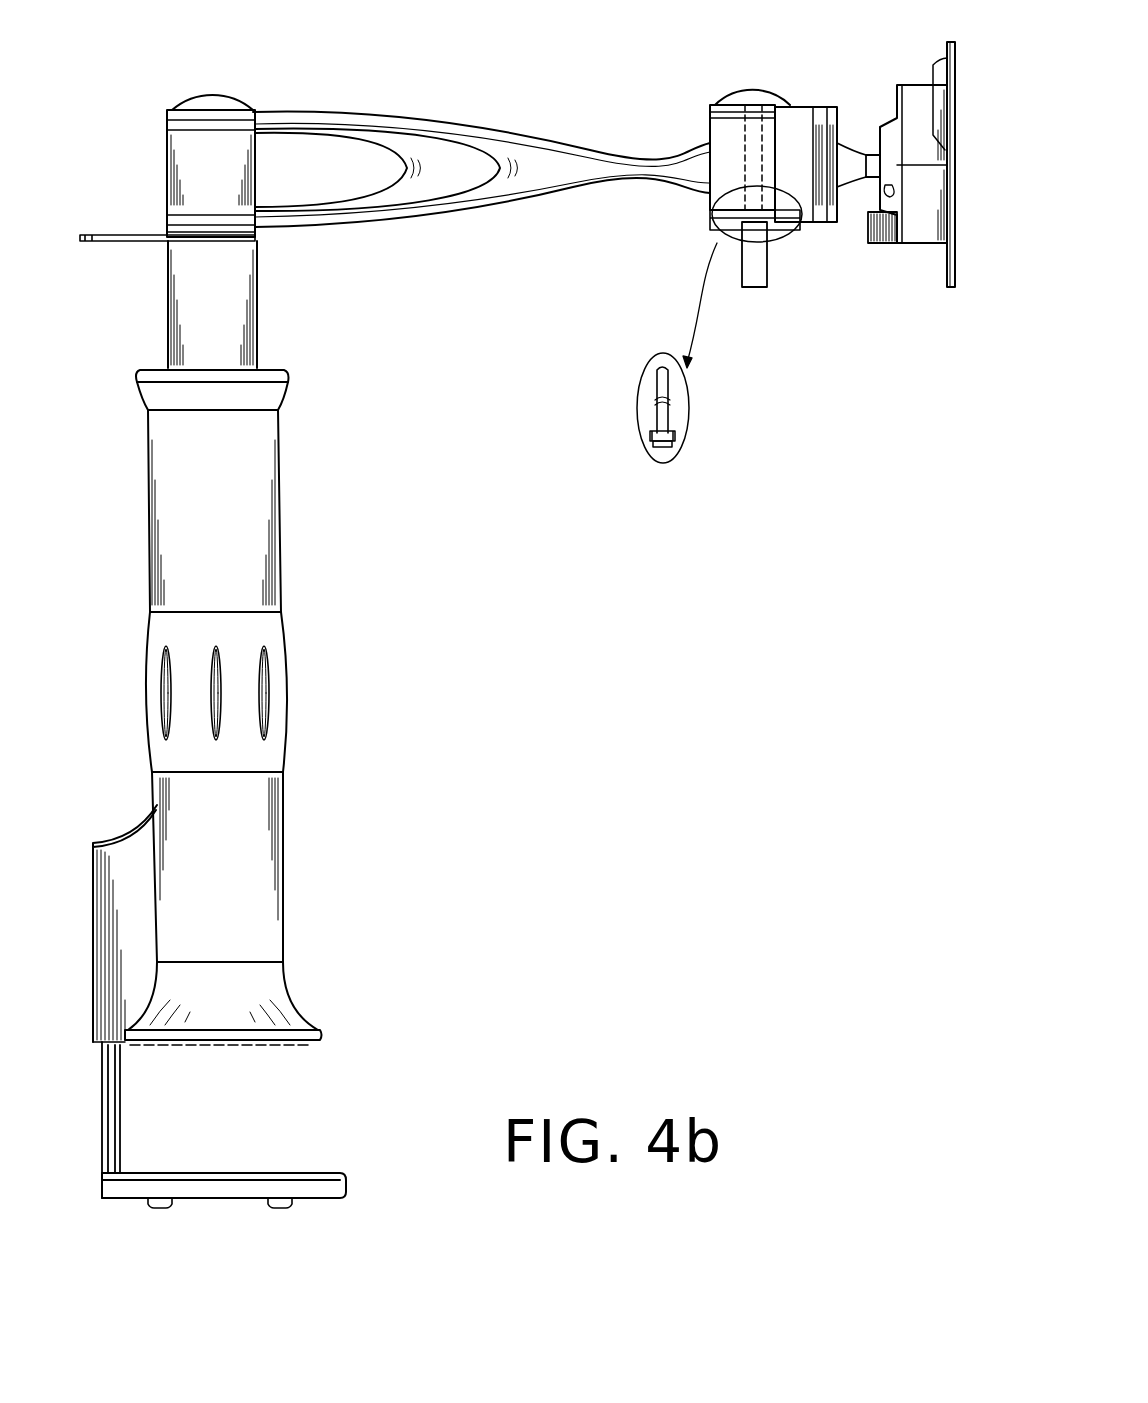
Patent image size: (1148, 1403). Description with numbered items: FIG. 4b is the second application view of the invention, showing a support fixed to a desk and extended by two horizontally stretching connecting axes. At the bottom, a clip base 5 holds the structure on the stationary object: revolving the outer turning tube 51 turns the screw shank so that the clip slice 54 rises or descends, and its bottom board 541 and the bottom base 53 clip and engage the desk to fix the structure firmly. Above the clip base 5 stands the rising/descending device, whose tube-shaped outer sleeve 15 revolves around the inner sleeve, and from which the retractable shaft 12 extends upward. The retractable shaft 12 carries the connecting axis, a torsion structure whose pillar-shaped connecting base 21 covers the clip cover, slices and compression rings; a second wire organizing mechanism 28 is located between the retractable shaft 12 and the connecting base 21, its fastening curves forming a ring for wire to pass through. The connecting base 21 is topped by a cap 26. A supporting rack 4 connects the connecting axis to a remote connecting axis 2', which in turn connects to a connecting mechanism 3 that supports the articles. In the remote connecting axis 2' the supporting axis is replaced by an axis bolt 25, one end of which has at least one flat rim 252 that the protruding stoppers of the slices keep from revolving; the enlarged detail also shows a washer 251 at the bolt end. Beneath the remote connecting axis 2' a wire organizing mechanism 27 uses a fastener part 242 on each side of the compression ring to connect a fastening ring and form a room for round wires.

The cap 26 is at (207, 101).
The connecting base 21 is at (185, 171).
The wire organizing mechanism 28 is at (130, 245).
The retractable shaft 12 is at (243, 317).
The supporting rack 4 is at (517, 183).
The remote connecting axis 2' is at (773, 133).
The axis bolt 25 is at (745, 132).
The washer 251 is at (652, 447).
The flat rim 252 is at (674, 440).
The fastener part 242 is at (760, 192).
The wire organizing mechanism 27 is at (755, 288).
The connecting mechanism 3 is at (925, 218).
The outer sleeve 15 is at (262, 509).
The outer turning tube 51 is at (285, 684).
The bottom base 53 is at (268, 884).
The clip base 5 is at (116, 806).
The clip slice 54 is at (113, 1112).
The bottom board 541 is at (232, 1187).